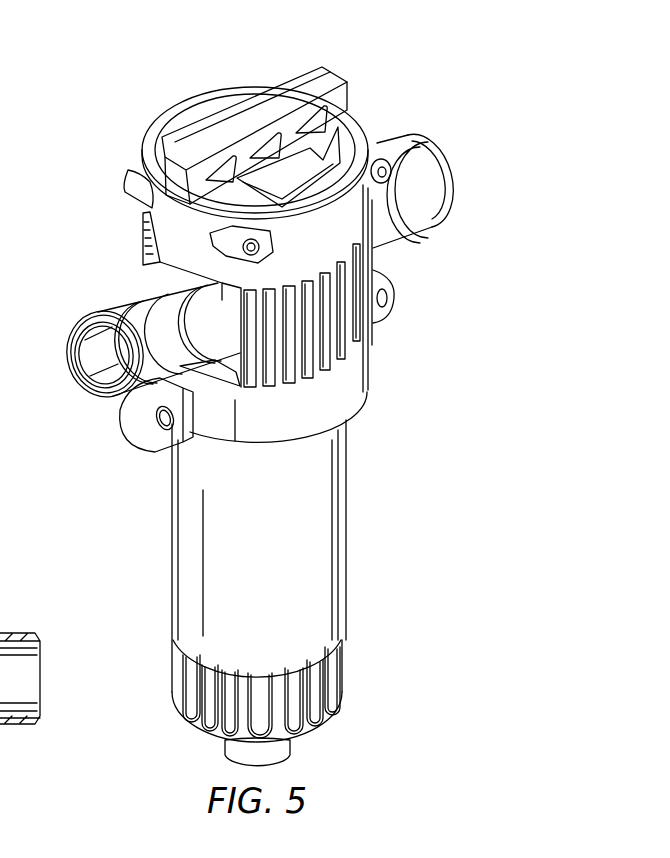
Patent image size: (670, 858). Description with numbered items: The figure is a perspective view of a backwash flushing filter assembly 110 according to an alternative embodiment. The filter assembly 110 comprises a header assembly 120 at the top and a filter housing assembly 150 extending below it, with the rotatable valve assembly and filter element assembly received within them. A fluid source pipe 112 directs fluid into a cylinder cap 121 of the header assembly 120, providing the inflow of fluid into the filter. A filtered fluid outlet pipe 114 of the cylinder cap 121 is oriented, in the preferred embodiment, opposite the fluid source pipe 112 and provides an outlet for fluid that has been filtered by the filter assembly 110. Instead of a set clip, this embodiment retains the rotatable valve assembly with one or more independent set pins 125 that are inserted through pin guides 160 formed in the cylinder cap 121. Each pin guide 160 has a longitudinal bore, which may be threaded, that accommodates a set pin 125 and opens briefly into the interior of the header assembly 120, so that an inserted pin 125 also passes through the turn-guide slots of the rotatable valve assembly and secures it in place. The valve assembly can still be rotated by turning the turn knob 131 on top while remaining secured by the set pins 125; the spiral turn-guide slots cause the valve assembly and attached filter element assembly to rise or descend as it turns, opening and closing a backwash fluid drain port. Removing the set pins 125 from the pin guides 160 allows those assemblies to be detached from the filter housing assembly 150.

The filter assembly 110 is at (217, 70).
The fluid source pipe 112 is at (75, 322).
The filtered fluid outlet pipe 114 is at (415, 138).
The header assembly 120 is at (122, 218).
The cylinder cap 121 is at (395, 235).
The set pin 125 is at (268, 244).
The turn knob 131 is at (330, 73).
The filter housing assembly 150 is at (353, 571).
The pin guide 160 is at (130, 185).